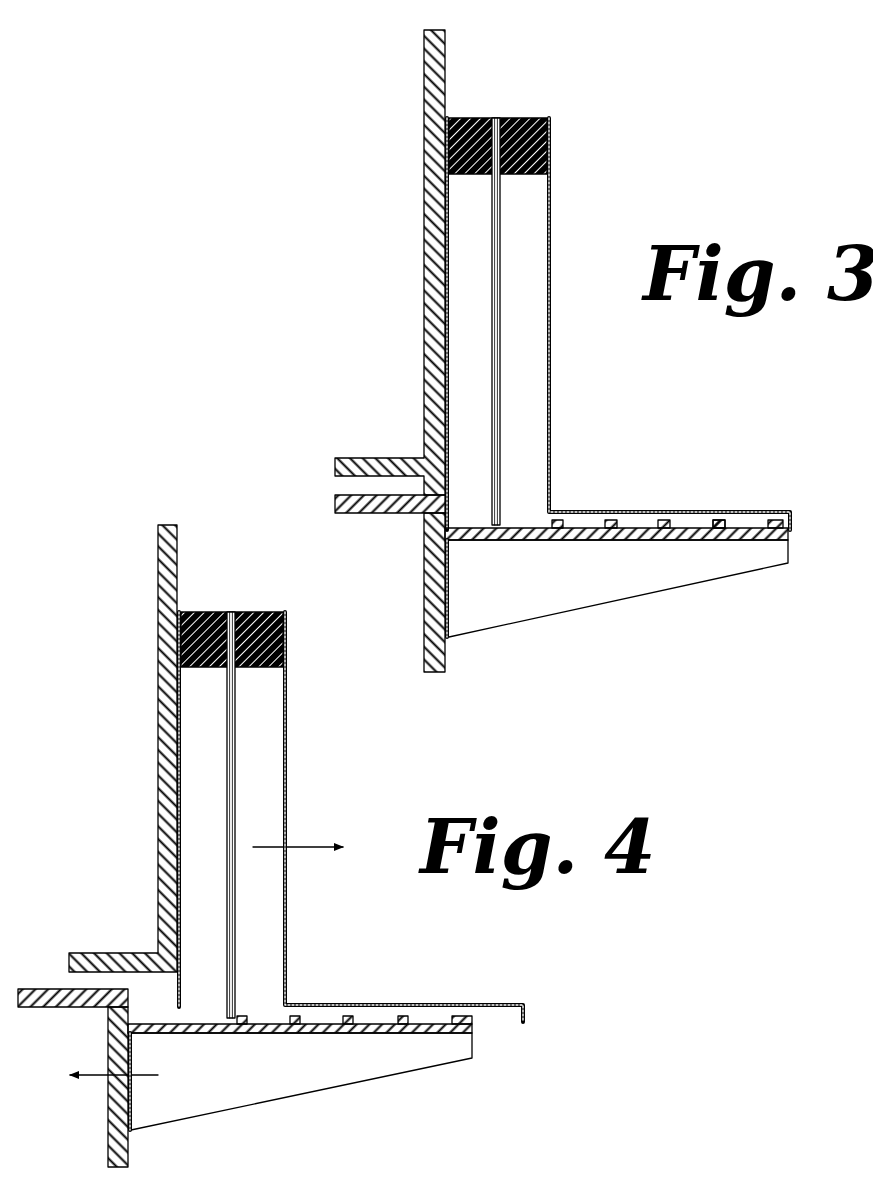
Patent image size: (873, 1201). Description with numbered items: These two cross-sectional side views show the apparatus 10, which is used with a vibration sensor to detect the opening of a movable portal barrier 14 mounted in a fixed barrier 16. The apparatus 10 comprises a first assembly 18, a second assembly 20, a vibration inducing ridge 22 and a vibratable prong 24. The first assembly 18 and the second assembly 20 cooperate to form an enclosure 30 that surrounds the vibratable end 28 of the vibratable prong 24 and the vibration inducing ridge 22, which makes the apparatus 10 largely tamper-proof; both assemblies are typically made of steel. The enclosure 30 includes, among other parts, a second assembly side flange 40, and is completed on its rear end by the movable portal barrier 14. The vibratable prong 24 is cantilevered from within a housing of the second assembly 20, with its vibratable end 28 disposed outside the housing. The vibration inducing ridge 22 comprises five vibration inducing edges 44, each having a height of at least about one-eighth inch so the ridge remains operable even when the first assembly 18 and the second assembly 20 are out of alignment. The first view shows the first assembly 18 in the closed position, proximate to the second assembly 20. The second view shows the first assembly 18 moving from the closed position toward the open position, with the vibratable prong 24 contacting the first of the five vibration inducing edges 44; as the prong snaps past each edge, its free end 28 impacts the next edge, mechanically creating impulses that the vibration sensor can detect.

In FIG. 3, the apparatus 10 is at (686, 361).
In FIG. 4, the apparatus 10 is at (380, 851).
In FIG. 3, the movable portal barrier 14 is at (447, 651).
In FIG. 4, the movable portal barrier 14 is at (128, 1160).
In FIG. 3, the fixed barrier 16 is at (446, 36).
In FIG. 4, the fixed barrier 16 is at (178, 536).
In FIG. 3, the first assembly 18 is at (793, 542).
In FIG. 4, the first assembly 18 is at (477, 1040).
In FIG. 3, the second assembly 20 is at (554, 130).
In FIG. 4, the second assembly 20 is at (290, 622).
In FIG. 3, the vibration inducing ridge 22 is at (726, 520).
In FIG. 3, the vibratable prong 24 is at (505, 262).
In FIG. 4, the vibratable prong 24 is at (240, 757).
In FIG. 3, the vibratable end 28 is at (507, 525).
In FIG. 4, the vibratable end 28 is at (176, 990).
In FIG. 3, the enclosure 30 is at (632, 520).
In FIG. 3, the second assembly side flange 40 is at (552, 210).
In FIG. 4, the second assembly side flange 40 is at (288, 700).
In FIG. 3, the vibration inducing edge 44 is at (556, 520).
In FIG. 4, the vibration inducing edge 44 is at (242, 1016).